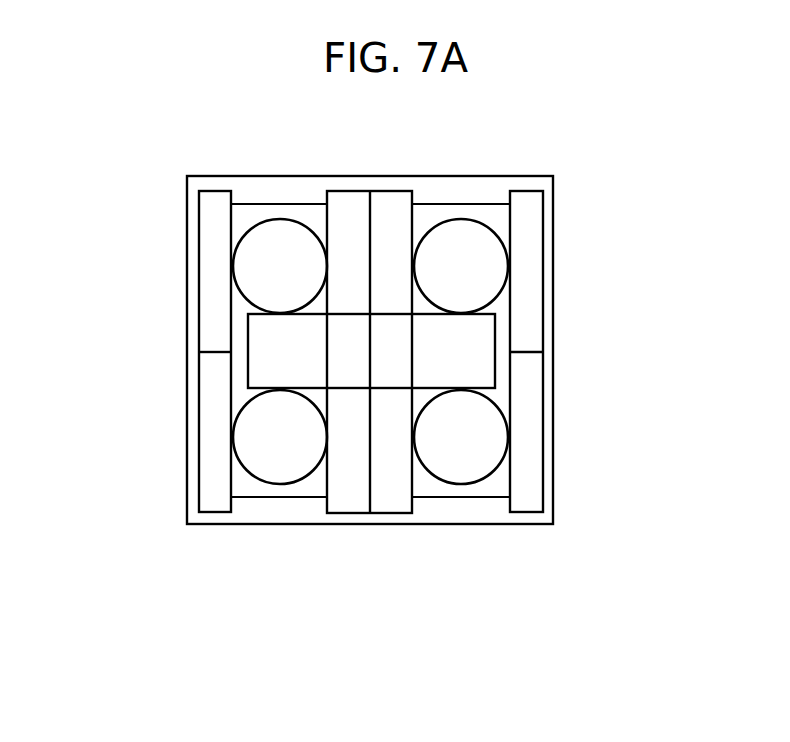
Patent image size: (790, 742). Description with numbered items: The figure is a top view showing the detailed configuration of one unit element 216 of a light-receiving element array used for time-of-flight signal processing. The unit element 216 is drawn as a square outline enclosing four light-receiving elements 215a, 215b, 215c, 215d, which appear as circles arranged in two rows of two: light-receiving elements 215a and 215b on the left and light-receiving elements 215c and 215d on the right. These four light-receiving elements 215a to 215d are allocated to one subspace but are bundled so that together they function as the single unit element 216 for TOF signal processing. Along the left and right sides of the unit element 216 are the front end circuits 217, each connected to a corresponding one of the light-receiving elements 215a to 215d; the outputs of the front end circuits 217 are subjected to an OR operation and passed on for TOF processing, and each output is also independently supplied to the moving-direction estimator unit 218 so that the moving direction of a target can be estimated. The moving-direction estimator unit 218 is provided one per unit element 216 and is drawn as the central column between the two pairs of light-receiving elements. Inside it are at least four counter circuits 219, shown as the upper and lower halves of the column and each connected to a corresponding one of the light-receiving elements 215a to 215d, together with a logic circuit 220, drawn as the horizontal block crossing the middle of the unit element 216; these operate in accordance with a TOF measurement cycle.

The light-receiving element 215a is at (253, 270).
The light-receiving element 215b is at (253, 437).
The light-receiving element 215c is at (487, 270).
The light-receiving element 215d is at (487, 440).
The unit element 216 is at (560, 166).
The front end circuit 217 is at (212, 384).
The moving-direction estimator unit 218 is at (338, 189).
The counter circuit 219 is at (390, 200).
The logic circuit 220 is at (446, 343).